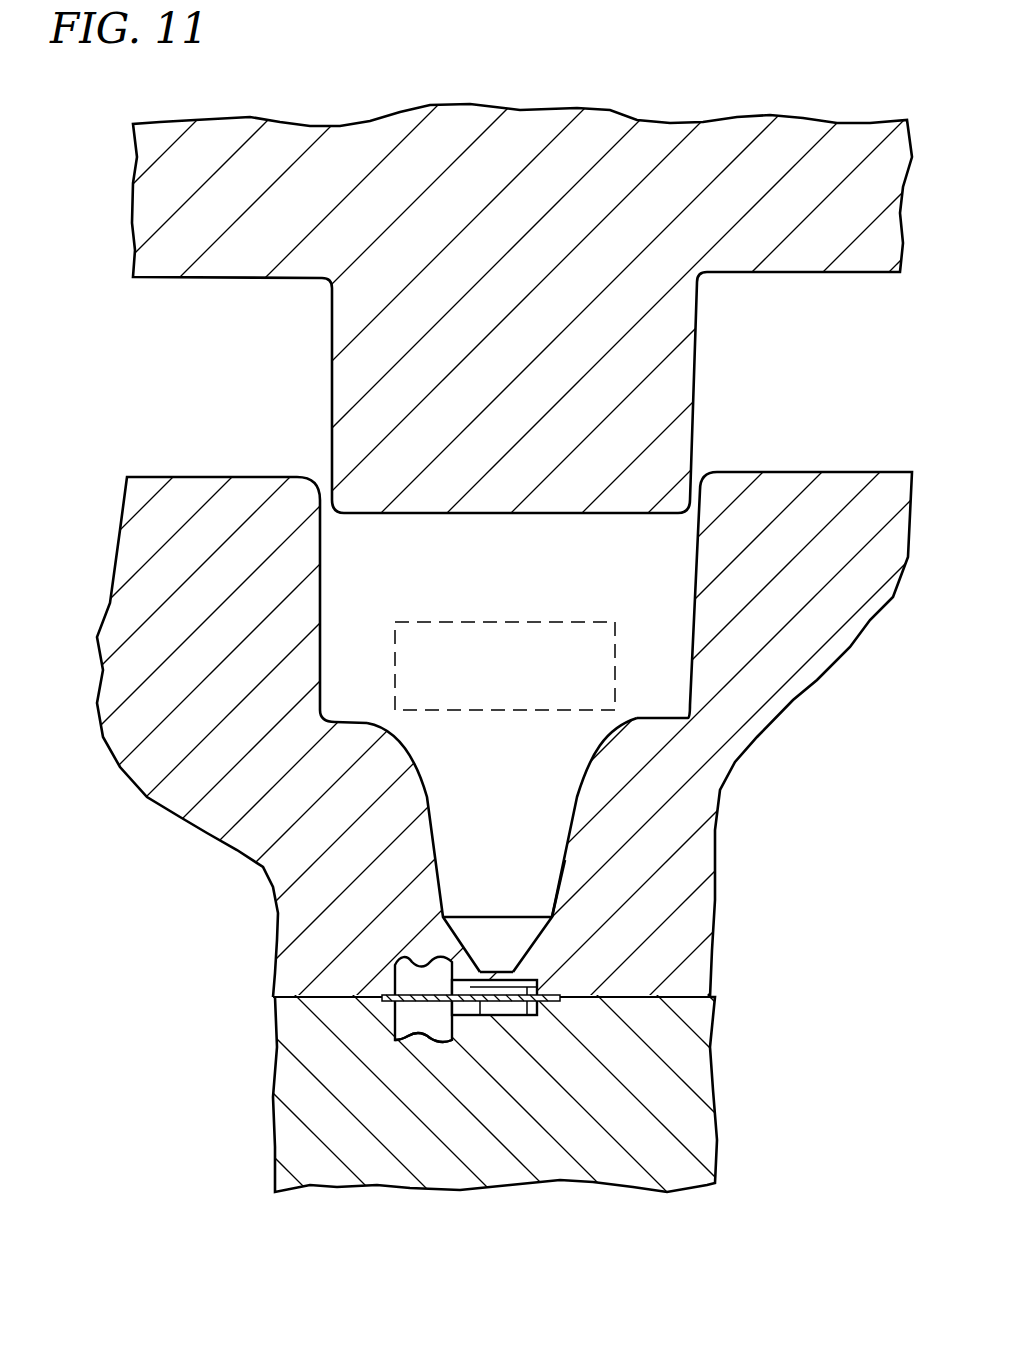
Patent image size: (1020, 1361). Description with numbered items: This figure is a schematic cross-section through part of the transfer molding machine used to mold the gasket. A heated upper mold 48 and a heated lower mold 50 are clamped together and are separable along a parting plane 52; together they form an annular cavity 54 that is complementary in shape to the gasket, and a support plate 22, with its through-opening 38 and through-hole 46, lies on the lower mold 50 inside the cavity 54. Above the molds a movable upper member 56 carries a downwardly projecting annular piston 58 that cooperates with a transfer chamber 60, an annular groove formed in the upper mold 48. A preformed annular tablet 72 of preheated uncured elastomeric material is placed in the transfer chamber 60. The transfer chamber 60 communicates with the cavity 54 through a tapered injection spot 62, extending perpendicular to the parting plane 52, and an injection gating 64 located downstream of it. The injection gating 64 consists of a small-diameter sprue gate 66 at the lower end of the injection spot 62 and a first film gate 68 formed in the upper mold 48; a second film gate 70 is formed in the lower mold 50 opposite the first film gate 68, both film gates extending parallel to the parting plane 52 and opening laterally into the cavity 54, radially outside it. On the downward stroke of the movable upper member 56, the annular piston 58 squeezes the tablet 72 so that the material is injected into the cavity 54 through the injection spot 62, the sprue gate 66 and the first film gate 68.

The movable upper member 56 is at (232, 260).
The annular piston 58 is at (672, 440).
The transfer chamber 60 is at (320, 598).
The preformed annular tablet 72 is at (573, 618).
The upper mold 48 is at (773, 693).
The injection spot 62 is at (516, 841).
The injection gating 64 is at (577, 937).
The sprue gate 66 is at (507, 977).
The parting plane 52 is at (640, 993).
The annular cavity 54 is at (410, 972).
The lower mold 50 is at (673, 1095).
The through-opening 38 is at (393, 1040).
The support plate 22 is at (435, 1010).
The second film gate 70 is at (480, 1007).
The through-hole 46 is at (493, 1000).
The first film gate 68 is at (527, 1015).